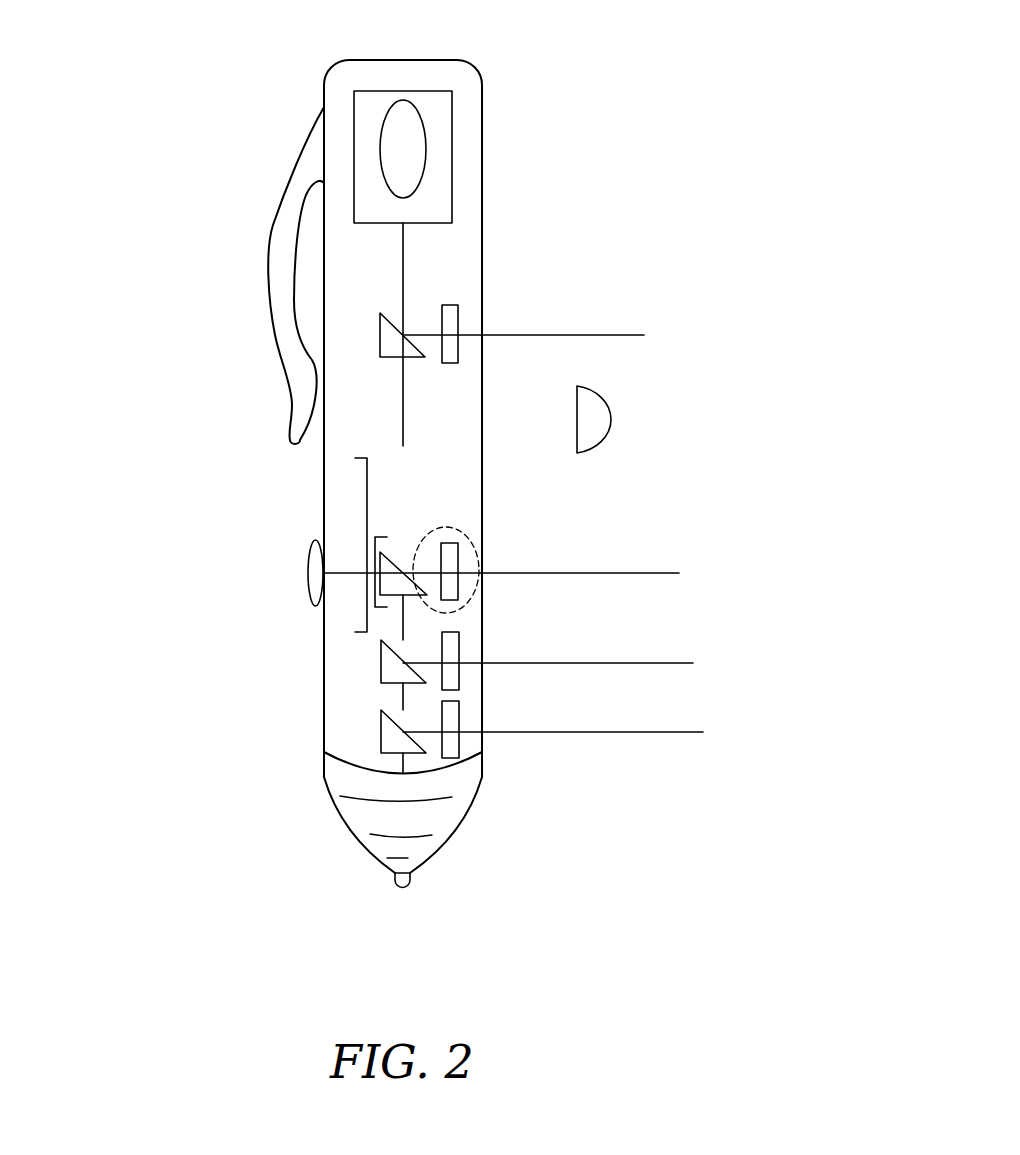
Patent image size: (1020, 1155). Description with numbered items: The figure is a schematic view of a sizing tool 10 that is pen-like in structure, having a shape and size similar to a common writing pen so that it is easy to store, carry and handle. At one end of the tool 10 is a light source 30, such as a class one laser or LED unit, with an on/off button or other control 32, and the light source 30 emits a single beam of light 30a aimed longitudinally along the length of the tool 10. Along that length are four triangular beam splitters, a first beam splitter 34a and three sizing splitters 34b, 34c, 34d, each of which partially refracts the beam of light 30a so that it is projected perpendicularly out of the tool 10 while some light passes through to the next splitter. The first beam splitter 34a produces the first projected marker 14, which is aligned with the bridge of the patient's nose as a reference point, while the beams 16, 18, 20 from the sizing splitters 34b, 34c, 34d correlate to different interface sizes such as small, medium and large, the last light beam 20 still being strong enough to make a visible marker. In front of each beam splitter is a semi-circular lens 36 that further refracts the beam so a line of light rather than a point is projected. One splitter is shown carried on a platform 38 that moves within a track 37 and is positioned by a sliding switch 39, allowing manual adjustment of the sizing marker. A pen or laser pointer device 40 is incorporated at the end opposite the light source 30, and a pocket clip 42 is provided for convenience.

The sizing tool 10 is at (285, 62).
The first projected marker 14 is at (592, 335).
The beam 16 is at (627, 573).
The beam 18 is at (640, 663).
The last light beam 20 is at (650, 732).
The light source 30 is at (438, 90).
The beam of light 30a is at (402, 252).
The on/off button or other control 32 is at (417, 153).
The first beam splitter 34a is at (400, 330).
The sizing splitter 34b is at (405, 565).
The sizing splitter 34c is at (380, 667).
The sizing splitter 34d is at (380, 738).
The lens 36 is at (452, 343).
The track 37 is at (368, 497).
The platform 38 is at (383, 547).
The sliding switch 39 is at (308, 573).
The pen or laser pointer device 40 is at (420, 880).
The pocket clip 42 is at (268, 286).